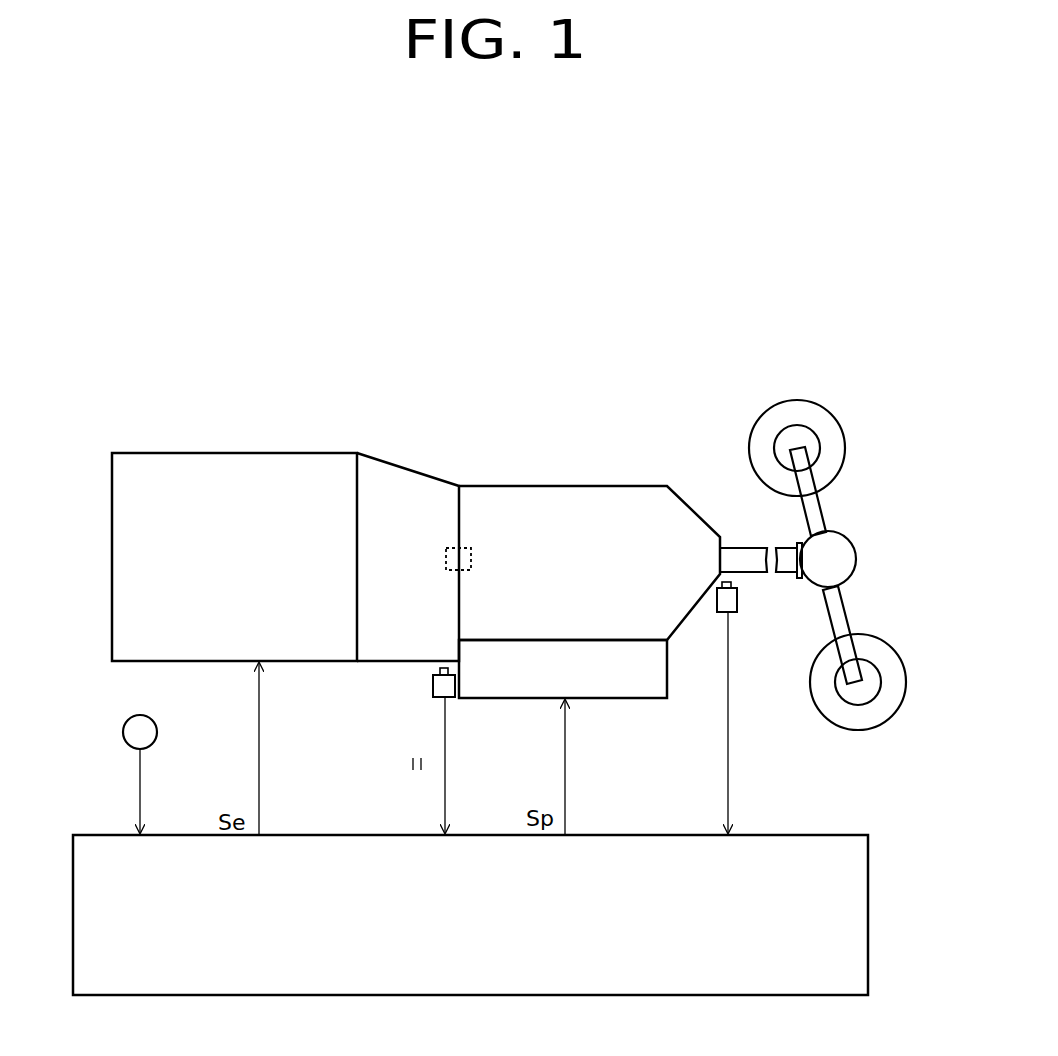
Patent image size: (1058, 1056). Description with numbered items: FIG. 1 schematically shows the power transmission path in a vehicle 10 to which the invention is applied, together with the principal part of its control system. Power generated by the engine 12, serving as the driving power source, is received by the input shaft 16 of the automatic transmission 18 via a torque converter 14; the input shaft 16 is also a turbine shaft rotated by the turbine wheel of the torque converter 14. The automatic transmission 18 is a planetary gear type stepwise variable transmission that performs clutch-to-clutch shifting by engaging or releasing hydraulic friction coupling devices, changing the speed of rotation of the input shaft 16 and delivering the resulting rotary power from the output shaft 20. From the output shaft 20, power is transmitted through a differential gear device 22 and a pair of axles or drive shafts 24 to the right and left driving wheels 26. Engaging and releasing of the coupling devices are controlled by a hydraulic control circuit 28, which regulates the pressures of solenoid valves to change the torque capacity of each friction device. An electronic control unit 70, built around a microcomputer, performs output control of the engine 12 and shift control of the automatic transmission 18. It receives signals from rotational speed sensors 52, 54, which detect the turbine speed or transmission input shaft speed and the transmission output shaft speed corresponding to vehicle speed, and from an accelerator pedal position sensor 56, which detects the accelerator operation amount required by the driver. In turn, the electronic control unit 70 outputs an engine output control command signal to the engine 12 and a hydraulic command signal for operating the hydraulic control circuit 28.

The vehicle 10 is at (650, 352).
The engine 12 is at (205, 462).
The torque converter 14 is at (424, 490).
The input shaft 16 is at (462, 546).
The automatic transmission 18 is at (596, 500).
The output shaft 20 is at (742, 553).
The differential gear device 22 is at (843, 548).
The axles 24 is at (818, 506).
The driving wheels 26 is at (812, 415).
The hydraulic control circuit 28 is at (484, 700).
The rotational speed sensor 52 is at (432, 683).
The rotational speed sensor 54 is at (738, 598).
The accelerator pedal position sensor 56 is at (124, 722).
The electronic control unit 70 is at (803, 845).